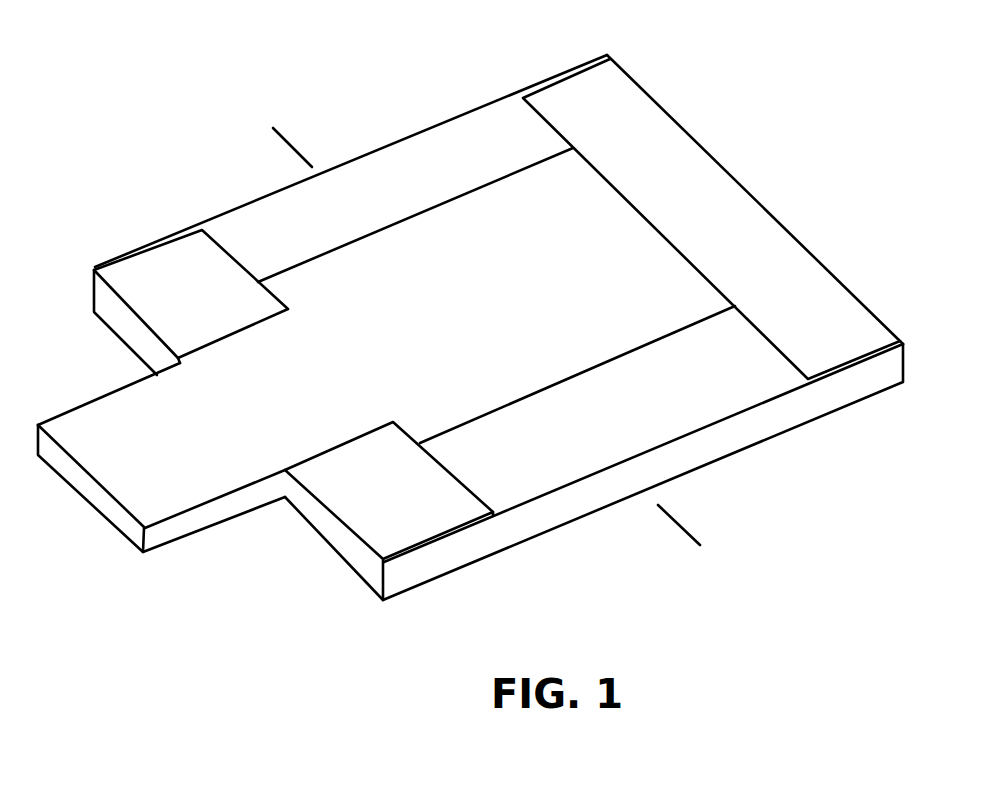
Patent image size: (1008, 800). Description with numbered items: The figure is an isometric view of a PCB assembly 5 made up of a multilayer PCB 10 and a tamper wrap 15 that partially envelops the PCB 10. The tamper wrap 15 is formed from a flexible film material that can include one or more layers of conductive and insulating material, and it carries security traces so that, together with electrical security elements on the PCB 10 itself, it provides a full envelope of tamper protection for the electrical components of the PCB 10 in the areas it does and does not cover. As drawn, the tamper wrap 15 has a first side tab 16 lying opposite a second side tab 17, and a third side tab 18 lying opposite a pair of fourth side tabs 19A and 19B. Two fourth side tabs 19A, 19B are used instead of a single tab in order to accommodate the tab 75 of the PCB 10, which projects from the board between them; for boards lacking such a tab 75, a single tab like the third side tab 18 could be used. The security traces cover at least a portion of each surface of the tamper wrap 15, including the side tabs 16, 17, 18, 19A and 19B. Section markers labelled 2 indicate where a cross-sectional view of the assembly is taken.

The PCB assembly 5 is at (470, 322).
The multilayer PCB 10 is at (567, 338).
The tamper wrap 15 is at (763, 183).
The first side tab 16 is at (470, 130).
The second side tab 17 is at (527, 472).
The third side tab 18 is at (672, 152).
The fourth side tab 19A is at (168, 273).
The fourth side tab 19B is at (385, 532).
The tab 75 is at (187, 490).
The section line 2- 2 is at (325, 120).